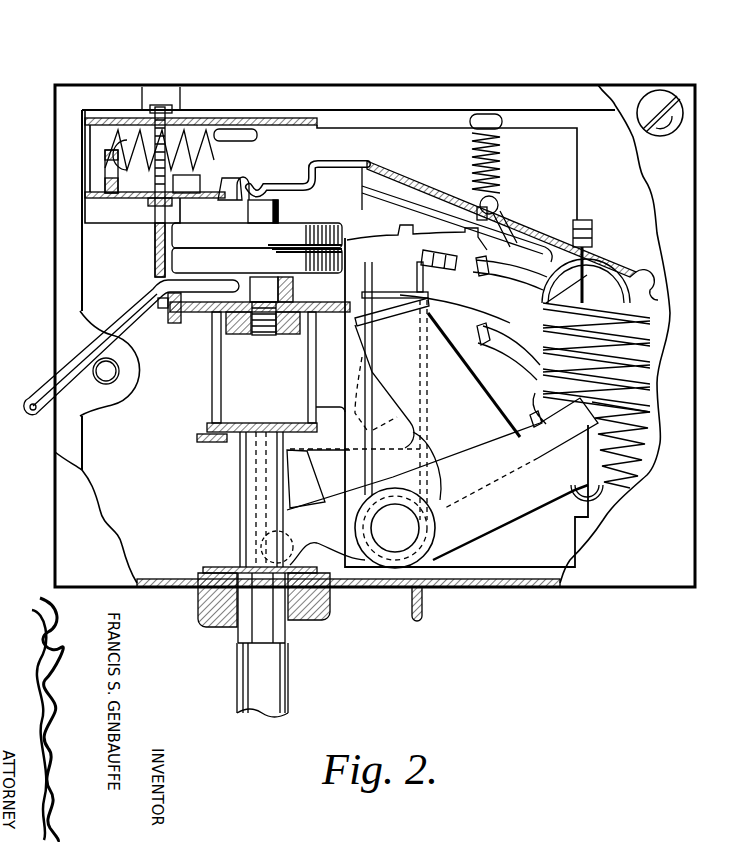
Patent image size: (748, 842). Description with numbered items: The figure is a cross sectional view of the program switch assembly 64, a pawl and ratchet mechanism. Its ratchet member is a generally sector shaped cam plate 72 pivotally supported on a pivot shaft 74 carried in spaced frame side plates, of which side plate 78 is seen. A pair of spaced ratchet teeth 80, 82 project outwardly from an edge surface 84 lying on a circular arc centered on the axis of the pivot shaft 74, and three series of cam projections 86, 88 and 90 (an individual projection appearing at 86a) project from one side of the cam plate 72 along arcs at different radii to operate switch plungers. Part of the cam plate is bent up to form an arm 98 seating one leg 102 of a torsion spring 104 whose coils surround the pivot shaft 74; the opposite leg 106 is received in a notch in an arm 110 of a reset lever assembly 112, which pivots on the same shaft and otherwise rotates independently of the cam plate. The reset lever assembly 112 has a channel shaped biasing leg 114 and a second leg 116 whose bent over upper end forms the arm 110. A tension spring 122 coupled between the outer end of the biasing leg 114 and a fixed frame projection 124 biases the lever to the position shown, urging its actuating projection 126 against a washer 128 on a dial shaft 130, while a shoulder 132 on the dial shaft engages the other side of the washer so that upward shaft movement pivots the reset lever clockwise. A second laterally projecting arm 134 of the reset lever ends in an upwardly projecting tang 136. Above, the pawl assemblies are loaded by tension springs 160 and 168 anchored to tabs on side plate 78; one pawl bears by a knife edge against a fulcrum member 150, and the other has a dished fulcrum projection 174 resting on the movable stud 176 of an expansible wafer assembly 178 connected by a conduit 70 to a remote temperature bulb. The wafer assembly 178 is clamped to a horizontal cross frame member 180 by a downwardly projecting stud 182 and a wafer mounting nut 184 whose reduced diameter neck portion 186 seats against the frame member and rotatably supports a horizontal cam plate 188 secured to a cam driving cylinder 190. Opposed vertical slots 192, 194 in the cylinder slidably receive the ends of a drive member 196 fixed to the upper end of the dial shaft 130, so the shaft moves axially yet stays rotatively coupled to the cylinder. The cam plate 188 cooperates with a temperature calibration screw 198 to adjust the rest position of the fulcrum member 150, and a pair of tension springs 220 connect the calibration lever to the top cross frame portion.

The program switch assembly 64 is at (577, 590).
The conduit 70 is at (44, 389).
The cam plate 72 is at (470, 315).
The pivot shaft 74 is at (408, 537).
The frame side plate 78 is at (550, 163).
The ratchet tooth 80 is at (411, 228).
The ratchet tooth 82 is at (467, 225).
The edge surface 84 is at (370, 240).
The cam projections 86 is at (503, 278).
The segmented portion 86a is at (470, 268).
The cam projections 88 is at (508, 355).
The cam projections 90 is at (529, 408).
The arm 98 is at (402, 290).
The leg 102 is at (428, 406).
The torsion spring 104 is at (432, 512).
The leg 106 is at (373, 347).
The arm 110 is at (387, 316).
The reset lever assembly 112 is at (524, 490).
The biasing leg 114 is at (483, 450).
The second leg 116 is at (440, 366).
The tension spring 122 is at (545, 336).
The fixed frame projection 124 is at (586, 261).
The actuating projection 126 is at (325, 536).
The washer 128 is at (220, 565).
The dial shaft 130 is at (288, 668).
The shoulder 132 is at (257, 568).
The second laterally projecting arm 134 is at (295, 508).
The tang 136 is at (303, 466).
The fulcrum member 150 is at (234, 182).
The tension spring 160 is at (652, 474).
The tension spring 168 is at (470, 160).
The fulcrum projection 174 is at (267, 190).
The movable stud 176 is at (260, 214).
The expansible wafer assembly 178 is at (193, 247).
The horizontal cross frame member 180 is at (304, 302).
The stud 182 is at (262, 322).
The wafer mounting nut 184 is at (237, 343).
The reduced diameter neck portion 186 is at (262, 314).
The horizontal cam plate 188 is at (202, 326).
The cam driving cylinder 190 is at (212, 405).
The slot 192 is at (220, 384).
The slot 194 is at (308, 402).
The drive member 196 is at (234, 440).
The temperature calibration screw 198 is at (166, 107).
The tension springs 220 is at (222, 133).